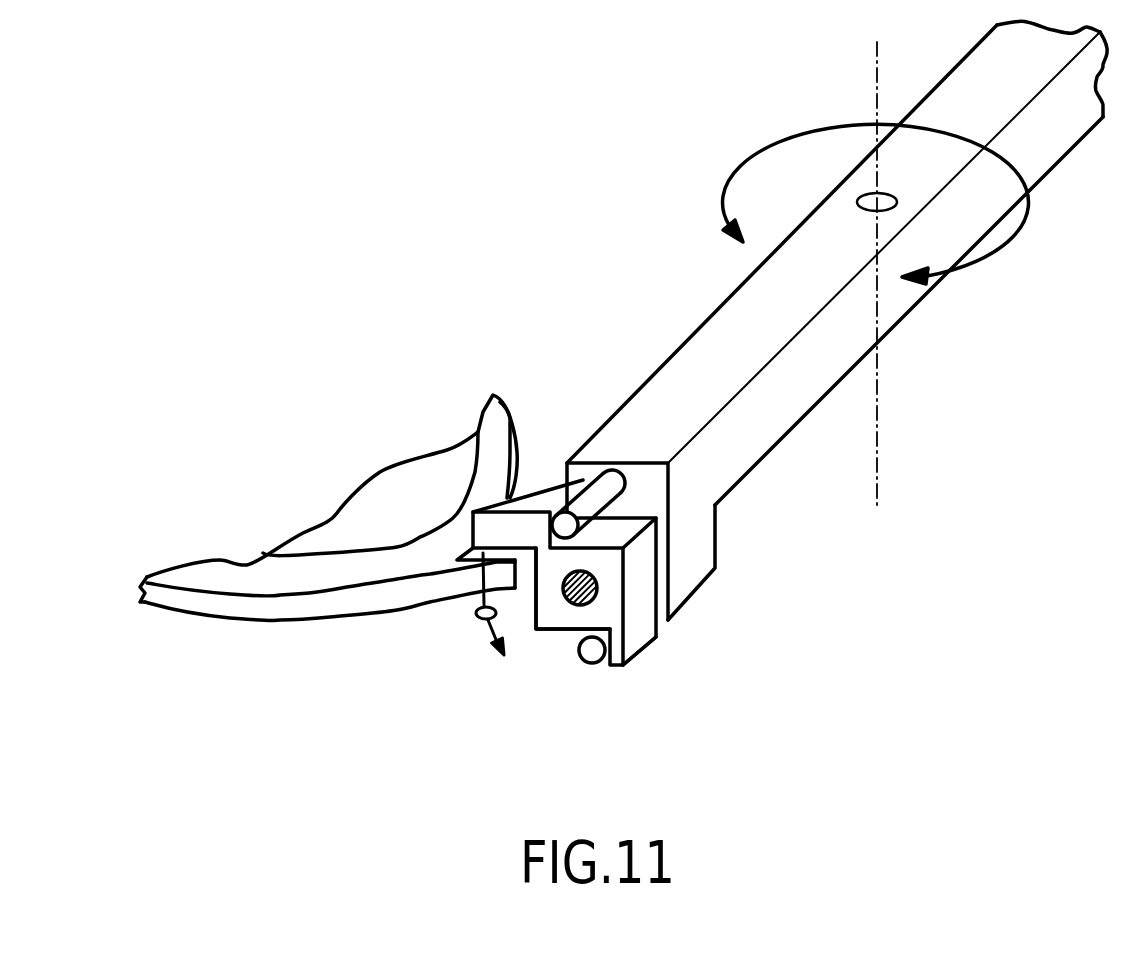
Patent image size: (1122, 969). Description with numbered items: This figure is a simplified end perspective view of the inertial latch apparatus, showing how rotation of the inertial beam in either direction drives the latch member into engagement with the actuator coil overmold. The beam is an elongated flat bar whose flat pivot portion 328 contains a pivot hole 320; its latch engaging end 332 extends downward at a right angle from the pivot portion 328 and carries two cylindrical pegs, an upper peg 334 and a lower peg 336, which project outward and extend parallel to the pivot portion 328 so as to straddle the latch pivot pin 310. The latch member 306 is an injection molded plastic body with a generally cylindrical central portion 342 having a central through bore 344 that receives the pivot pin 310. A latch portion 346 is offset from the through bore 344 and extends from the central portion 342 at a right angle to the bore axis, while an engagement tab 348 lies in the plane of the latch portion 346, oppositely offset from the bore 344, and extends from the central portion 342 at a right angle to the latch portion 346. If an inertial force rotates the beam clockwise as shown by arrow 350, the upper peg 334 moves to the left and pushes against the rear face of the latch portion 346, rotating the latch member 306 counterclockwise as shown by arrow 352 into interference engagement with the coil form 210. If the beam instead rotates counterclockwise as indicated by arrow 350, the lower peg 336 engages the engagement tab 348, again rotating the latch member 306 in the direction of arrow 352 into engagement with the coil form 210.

The coil form 210 is at (332, 603).
The latch member 306 is at (645, 648).
The latch pivot pin 310 is at (538, 612).
The pivot hole 320 is at (883, 200).
The flat pivot portion 328 is at (887, 310).
The latch engaging end 332 is at (702, 538).
The upper peg 334 is at (600, 495).
The lower peg 336 is at (592, 663).
The central portion 342 is at (637, 587).
The through bore 344 is at (536, 627).
The latch portion 346 is at (536, 500).
The engagement tab 348 is at (630, 660).
The arrow 350 is at (783, 136).
The arrow 352 is at (482, 612).